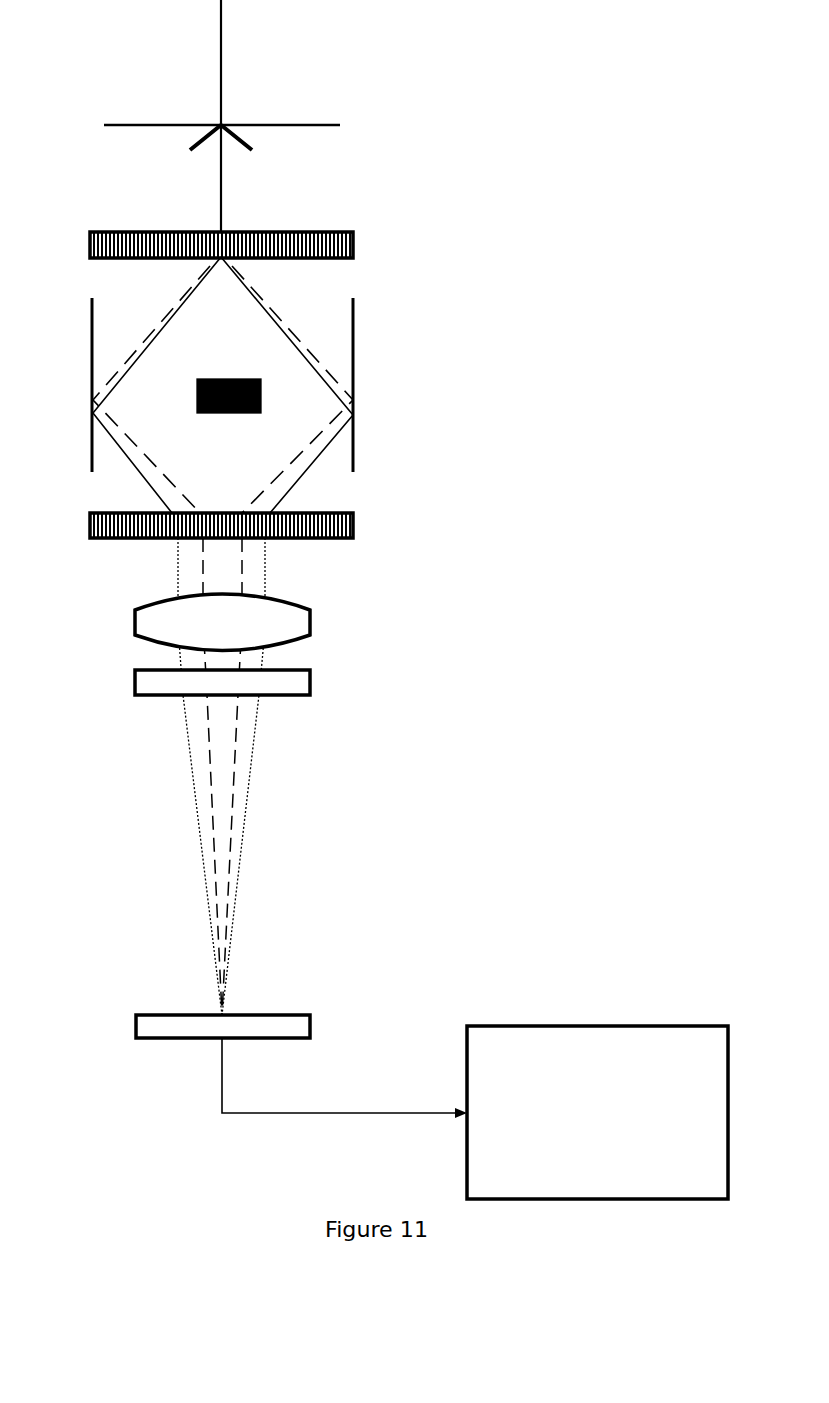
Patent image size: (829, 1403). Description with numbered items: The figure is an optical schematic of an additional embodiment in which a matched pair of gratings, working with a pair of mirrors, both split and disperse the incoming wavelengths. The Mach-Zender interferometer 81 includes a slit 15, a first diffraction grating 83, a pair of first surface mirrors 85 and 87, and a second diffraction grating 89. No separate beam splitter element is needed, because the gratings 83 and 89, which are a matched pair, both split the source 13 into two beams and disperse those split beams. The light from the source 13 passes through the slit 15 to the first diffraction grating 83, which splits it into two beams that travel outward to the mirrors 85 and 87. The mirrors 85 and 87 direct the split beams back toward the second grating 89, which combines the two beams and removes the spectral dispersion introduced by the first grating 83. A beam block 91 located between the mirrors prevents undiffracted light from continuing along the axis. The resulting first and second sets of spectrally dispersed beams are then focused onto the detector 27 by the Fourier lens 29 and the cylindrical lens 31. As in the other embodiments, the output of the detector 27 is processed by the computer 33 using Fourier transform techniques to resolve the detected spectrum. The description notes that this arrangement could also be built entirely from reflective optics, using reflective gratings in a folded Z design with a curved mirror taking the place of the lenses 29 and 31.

The source 13 is at (222, 85).
The slit 15 is at (340, 125).
The detector 27 is at (136, 1027).
The Fourier lens 29 is at (135, 622).
The cylindrical lens 31 is at (135, 680).
The computer 33 is at (598, 1026).
The Mach-Zender interferometer 81 is at (557, 538).
The first diffraction grating 83 is at (353, 245).
The first surface mirror 85 is at (92, 358).
The first surface mirror 87 is at (353, 357).
The second diffraction grating 89 is at (353, 522).
The beam block 91 is at (262, 398).